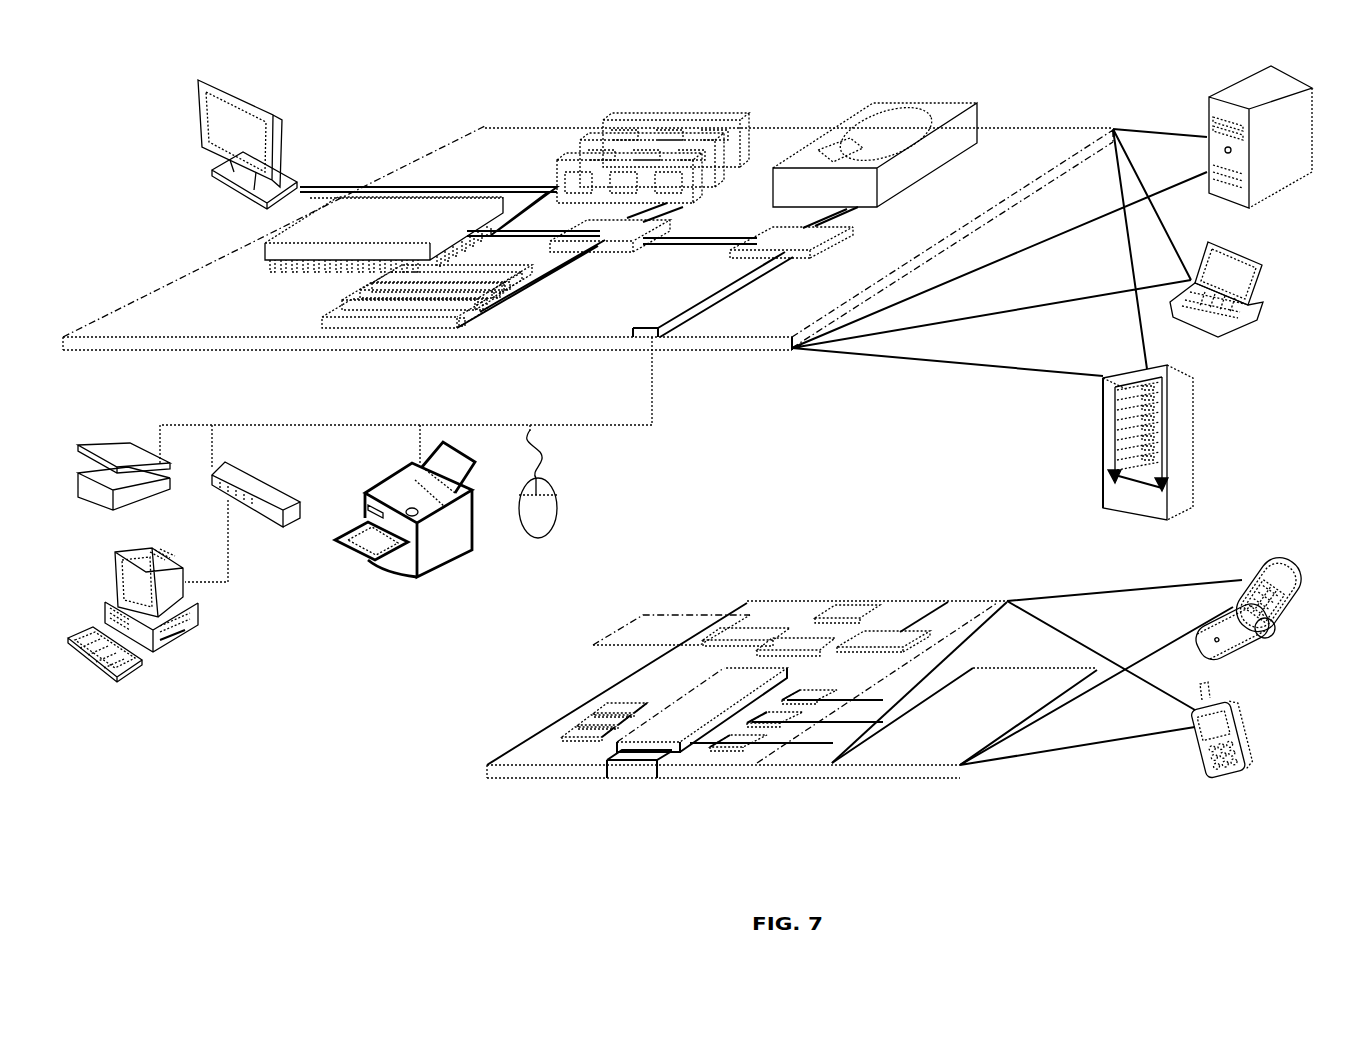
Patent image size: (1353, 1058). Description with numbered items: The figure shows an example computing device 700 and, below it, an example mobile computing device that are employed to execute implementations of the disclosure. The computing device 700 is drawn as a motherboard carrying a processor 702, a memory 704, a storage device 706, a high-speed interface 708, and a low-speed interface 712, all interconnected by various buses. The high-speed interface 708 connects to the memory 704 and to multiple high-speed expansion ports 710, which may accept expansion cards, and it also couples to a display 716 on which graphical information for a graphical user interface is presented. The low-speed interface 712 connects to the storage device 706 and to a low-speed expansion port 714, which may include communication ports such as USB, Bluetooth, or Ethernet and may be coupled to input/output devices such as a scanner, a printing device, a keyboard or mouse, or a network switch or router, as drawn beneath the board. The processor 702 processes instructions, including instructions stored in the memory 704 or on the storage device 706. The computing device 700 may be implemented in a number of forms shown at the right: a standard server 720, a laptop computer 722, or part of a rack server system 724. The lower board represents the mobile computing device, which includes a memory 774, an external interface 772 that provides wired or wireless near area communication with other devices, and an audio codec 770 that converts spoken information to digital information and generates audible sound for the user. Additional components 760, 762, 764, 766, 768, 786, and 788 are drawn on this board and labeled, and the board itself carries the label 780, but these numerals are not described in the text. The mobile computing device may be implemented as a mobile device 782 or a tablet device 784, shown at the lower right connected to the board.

The computing device 700 is at (397, 95).
The processor 702 is at (266, 257).
The memory 704 is at (608, 90).
The storage device 706 is at (875, 108).
The high-speed interface 708 is at (590, 233).
The high-speed expansion ports 710 is at (345, 306).
The low-speed interface 712 is at (770, 240).
The low-speed expansion port 714 is at (663, 337).
The display 716 is at (199, 76).
The standard server 720 is at (1207, 112).
The laptop computer 722 is at (1265, 263).
The rack server system 724 is at (1102, 466).
The component 760 is at (818, 730).
The connector block 762 is at (637, 765).
The stacked components 764 is at (585, 727).
The connector 766 is at (800, 640).
The component 768 is at (890, 628).
The audio codec 770 is at (858, 607).
The external interface 772 is at (722, 616).
The memory 774 is at (648, 617).
The mobile device / device board 780 is at (1254, 562).
The mobile device 782 is at (673, 732).
The tablet device 784 is at (923, 750).
The component 786 is at (746, 740).
The component 788 is at (810, 693).